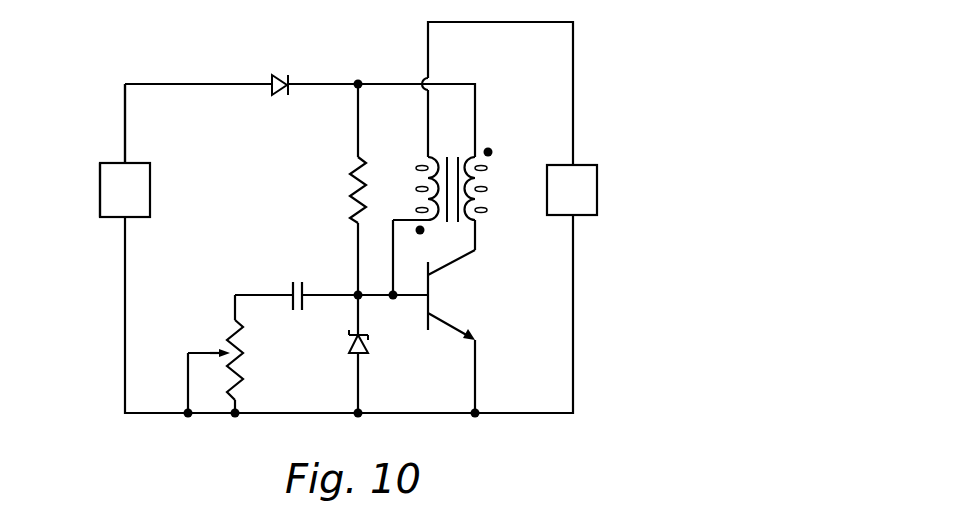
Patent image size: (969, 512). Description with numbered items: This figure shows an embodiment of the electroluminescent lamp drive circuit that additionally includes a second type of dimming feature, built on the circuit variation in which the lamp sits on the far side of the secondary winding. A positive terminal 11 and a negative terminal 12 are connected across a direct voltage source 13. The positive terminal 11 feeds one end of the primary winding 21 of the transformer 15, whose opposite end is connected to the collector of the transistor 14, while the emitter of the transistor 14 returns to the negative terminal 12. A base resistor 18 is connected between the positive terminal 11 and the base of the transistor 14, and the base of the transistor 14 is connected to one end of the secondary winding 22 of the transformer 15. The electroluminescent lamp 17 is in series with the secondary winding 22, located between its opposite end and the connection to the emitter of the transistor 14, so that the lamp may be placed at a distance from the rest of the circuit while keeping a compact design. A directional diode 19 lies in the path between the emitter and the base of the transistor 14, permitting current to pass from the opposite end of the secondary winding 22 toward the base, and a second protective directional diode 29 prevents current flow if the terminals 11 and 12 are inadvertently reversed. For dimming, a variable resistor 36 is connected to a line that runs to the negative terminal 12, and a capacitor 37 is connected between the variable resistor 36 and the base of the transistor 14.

The positive terminal 11 is at (117, 160).
The negative terminal 12 is at (120, 220).
The direct voltage source 13 is at (100, 195).
The transistor 14 is at (436, 301).
The transformer 15 is at (456, 184).
The electroluminescent lamp 17 is at (597, 200).
The base resistor 18 is at (352, 178).
The directional diode 19 is at (366, 351).
The primary winding 21 is at (483, 179).
The secondary winding 22 is at (420, 186).
The second protective directional diode 29 is at (283, 96).
The variable resistor 36 is at (238, 382).
The capacitor 37 is at (297, 281).